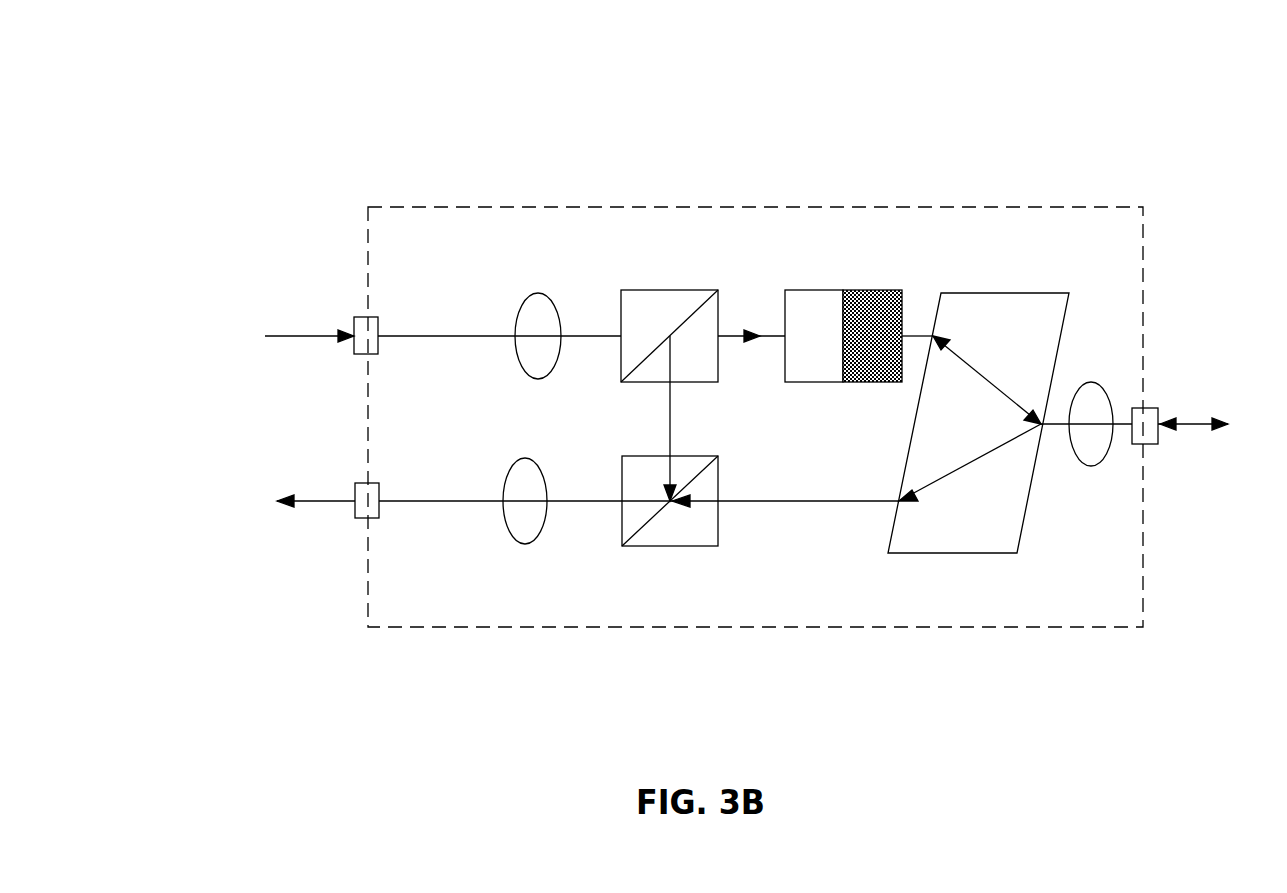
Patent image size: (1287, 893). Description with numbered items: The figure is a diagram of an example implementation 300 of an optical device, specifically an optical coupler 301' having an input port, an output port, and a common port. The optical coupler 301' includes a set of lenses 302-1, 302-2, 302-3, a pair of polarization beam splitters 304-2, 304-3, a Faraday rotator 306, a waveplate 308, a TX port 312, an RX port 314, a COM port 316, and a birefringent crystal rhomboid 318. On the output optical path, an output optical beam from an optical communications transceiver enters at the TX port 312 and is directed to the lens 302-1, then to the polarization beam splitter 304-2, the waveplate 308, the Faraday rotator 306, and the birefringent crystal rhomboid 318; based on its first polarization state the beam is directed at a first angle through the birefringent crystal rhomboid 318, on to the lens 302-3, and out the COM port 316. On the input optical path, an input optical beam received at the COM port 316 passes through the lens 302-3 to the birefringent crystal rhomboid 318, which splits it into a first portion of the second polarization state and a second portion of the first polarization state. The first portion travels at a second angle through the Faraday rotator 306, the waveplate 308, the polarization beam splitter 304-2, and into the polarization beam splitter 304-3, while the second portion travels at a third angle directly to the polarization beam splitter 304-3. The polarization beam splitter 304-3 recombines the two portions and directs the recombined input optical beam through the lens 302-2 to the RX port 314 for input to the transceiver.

The example implementation 300 is at (272, 54).
The optical coupler 301' is at (755, 396).
The lens 302-1 is at (538, 292).
The lens 302-2 is at (524, 458).
The lens 302-3 is at (1111, 396).
The polarization beam splitter 304-2 is at (670, 290).
The polarization beam splitter 304-3 is at (708, 456).
The Faraday rotator 306 is at (872, 290).
The waveplate 308 is at (812, 290).
The TX port 312 is at (350, 355).
The RX port 314 is at (352, 518).
The COM port 316 is at (1141, 445).
The birefringent crystal rhomboid 318 is at (948, 553).